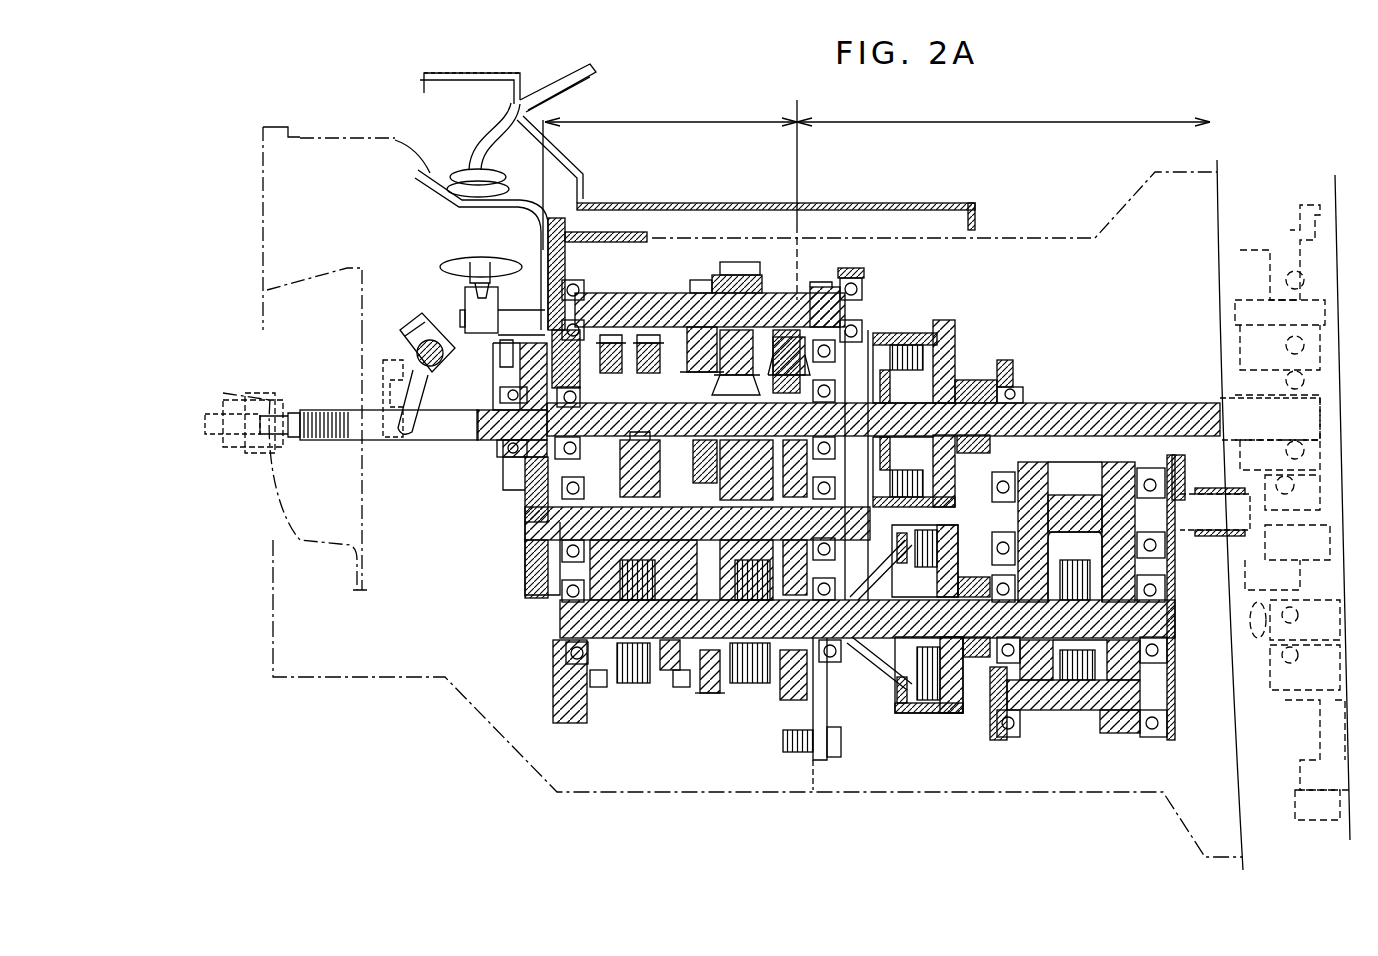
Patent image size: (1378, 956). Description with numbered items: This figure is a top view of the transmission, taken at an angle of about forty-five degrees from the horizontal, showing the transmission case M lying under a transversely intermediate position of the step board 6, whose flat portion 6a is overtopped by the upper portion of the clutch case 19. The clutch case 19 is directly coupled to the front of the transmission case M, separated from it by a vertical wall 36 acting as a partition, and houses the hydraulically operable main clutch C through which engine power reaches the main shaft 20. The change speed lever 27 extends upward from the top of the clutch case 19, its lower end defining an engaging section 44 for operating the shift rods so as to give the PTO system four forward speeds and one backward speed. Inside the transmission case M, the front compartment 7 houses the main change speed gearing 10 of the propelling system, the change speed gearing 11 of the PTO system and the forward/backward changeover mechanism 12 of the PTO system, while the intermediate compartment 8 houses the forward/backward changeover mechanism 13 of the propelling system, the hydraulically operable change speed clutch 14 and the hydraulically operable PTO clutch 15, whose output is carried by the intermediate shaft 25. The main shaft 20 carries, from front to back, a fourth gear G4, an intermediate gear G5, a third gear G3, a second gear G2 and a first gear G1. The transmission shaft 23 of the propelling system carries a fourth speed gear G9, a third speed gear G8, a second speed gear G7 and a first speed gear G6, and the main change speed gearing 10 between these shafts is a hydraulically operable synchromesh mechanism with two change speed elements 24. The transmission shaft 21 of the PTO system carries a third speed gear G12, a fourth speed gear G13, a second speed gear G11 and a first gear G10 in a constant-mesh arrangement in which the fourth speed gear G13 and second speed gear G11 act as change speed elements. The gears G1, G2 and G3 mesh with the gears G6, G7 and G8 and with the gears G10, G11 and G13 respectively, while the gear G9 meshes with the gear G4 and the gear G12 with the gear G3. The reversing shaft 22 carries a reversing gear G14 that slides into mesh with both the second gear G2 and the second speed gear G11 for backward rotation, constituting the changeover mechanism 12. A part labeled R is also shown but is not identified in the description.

The step board 6 is at (933, 203).
The flat portion 6a is at (618, 194).
The front compartment 7 is at (671, 111).
The intermediate compartment 8 is at (1003, 111).
The main change speed gearing 10 is at (687, 718).
The change speed gearing 11 is at (628, 320).
The forward/backward changeover mechanism 12 is at (696, 250).
The forward/backward changeover mechanism 13 is at (1068, 718).
The change speed clutch 14 is at (930, 713).
The PTO clutch 15 is at (952, 330).
The clutch case 19 is at (355, 677).
The main shaft 20 is at (540, 522).
The transmission shaft 21 is at (487, 440).
The reversing shaft 22 is at (850, 312).
The transmission shaft 23 is at (552, 635).
The change speed elements 24 is at (628, 685).
The intermediate shaft 25 is at (1093, 403).
The change speed lever 27 is at (556, 92).
The vertical wall 36 is at (545, 250).
The engaging section 44 is at (462, 300).
The main clutch C is at (313, 545).
The transmission case M is at (860, 796).
The reverse shift arm R is at (512, 312).
The first gear G1 is at (820, 516).
The second gear G2 is at (724, 470).
The third gear G3 is at (683, 440).
The fourth gear G4 is at (530, 488).
The intermediate gear G5 is at (530, 587).
The first speed gear G6 is at (790, 700).
The second speed gear G7 is at (713, 697).
The third speed gear G8 is at (680, 688).
The fourth speed gear G9 is at (598, 690).
The first gear G10 is at (787, 340).
The second speed gear G11 is at (722, 265).
The third speed gear G12 is at (600, 340).
The fourth speed gear G13 is at (650, 340).
The reversing gear G14 is at (742, 262).